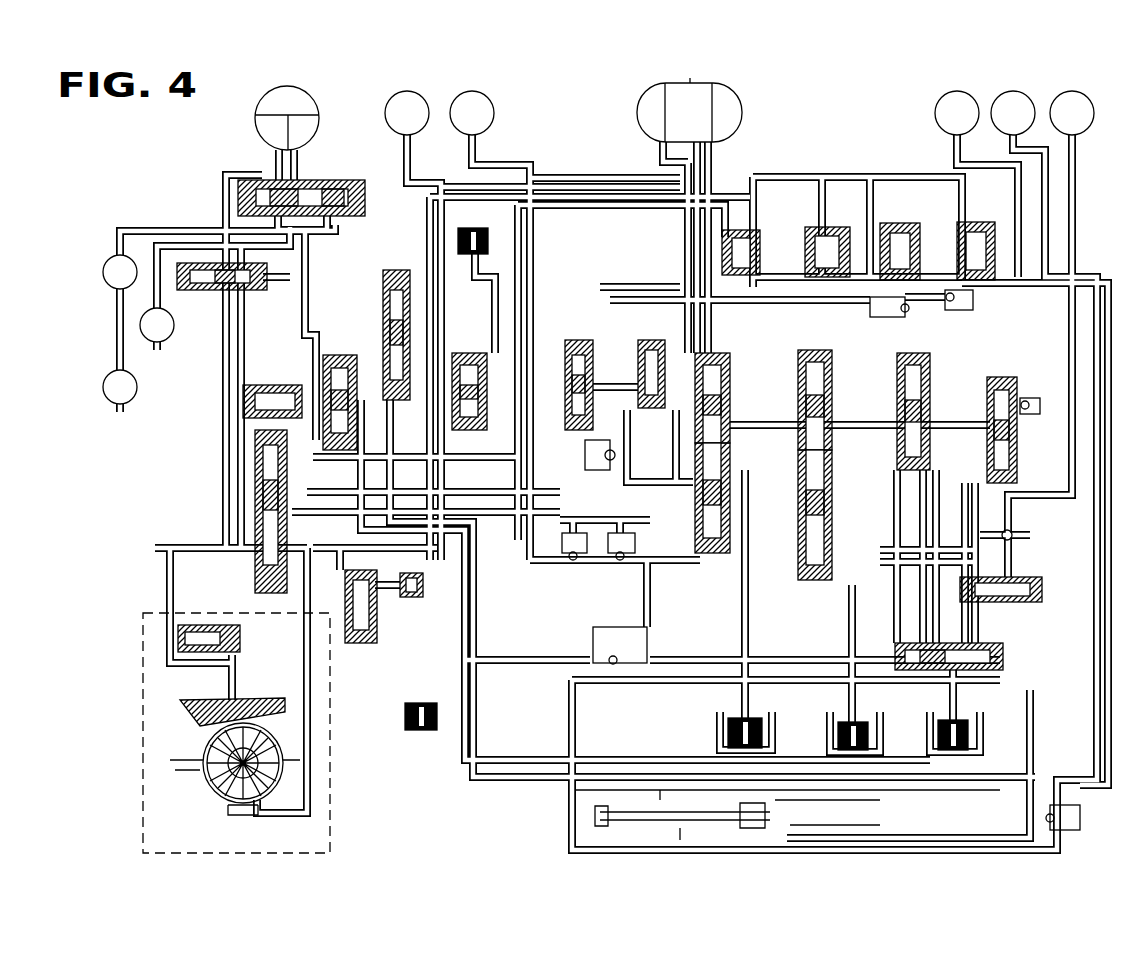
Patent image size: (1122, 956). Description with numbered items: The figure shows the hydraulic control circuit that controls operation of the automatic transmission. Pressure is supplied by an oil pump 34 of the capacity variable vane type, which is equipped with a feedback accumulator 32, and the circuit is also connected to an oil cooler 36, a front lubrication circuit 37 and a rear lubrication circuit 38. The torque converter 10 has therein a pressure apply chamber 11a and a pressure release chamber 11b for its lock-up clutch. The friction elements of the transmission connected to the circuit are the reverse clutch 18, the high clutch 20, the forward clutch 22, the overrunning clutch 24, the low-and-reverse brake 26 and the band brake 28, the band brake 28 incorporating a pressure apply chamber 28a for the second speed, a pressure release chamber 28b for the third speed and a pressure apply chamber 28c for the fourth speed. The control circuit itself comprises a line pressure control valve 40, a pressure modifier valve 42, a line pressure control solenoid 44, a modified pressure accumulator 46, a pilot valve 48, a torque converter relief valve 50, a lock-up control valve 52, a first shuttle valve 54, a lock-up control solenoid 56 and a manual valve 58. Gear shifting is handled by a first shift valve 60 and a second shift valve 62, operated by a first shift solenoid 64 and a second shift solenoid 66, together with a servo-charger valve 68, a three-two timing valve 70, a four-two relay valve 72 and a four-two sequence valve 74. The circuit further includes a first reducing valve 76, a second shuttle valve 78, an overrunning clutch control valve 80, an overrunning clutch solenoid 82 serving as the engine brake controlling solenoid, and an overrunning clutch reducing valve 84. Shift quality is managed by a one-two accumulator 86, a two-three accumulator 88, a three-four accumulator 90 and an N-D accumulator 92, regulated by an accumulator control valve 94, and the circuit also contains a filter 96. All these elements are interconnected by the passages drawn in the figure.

The torque converter 10 is at (306, 96).
The pressure apply chamber 11a is at (320, 127).
The pressure release chamber 11b is at (255, 130).
The reverse clutch 18 is at (414, 94).
The high clutch 20 is at (486, 94).
The forward clutch 22 is at (963, 92).
The overrunning clutch 24 is at (1018, 92).
The low-and-reverse brake 26 is at (1080, 92).
The band brake 28 is at (738, 90).
The pressure apply chamber for the second speed 28a is at (638, 112).
The pressure release chamber for the third speed 28b is at (693, 70).
The pressure apply chamber for the fourth speed 28c is at (746, 114).
The feedback accumulator 32 is at (242, 646).
The oil pump 34 is at (210, 800).
The oil cooler 36 is at (103, 270).
The front lubrication circuit 37 is at (168, 338).
The rear lubrication circuit 38 is at (103, 383).
The line pressure control valve 40 is at (253, 574).
The pressure modifier valve 42 is at (340, 355).
The line pressure control solenoid 44 is at (405, 730).
The modified pressure accumulator 46 is at (272, 385).
The pilot valve 48 is at (378, 636).
The torque converter relief valve 50 is at (260, 292).
The lock-up control valve 52 is at (362, 216).
The first shuttle valve 54 is at (578, 432).
The lock-up control solenoid 56 is at (490, 240).
The manual valve 58 is at (835, 794).
The first shift valve 60 is at (810, 350).
The second shift valve 62 is at (712, 353).
The first shift solenoid 64 is at (870, 730).
The second shift solenoid 66 is at (762, 722).
The servo-charger valve 68 is at (383, 300).
The 3-2 timing valve 70 is at (652, 410).
The 4-2 relay valve 72 is at (800, 562).
The 4-2 sequence valve 74 is at (732, 530).
The first reducing valve 76 is at (1035, 577).
The second shuttle valve 78 is at (935, 672).
The overrunning clutch control valve 80 is at (932, 448).
The overrunning clutch solenoid 82 is at (953, 752).
The overrunning clutch reducing valve 84 is at (1003, 377).
The 1-2 accumulator 86 is at (835, 236).
The 2-3 accumulator 88 is at (905, 232).
The 3-4 accumulator 90 is at (760, 242).
The N-D accumulator 92 is at (975, 232).
The accumulator control valve 94 is at (470, 353).
The filter 96 is at (412, 598).